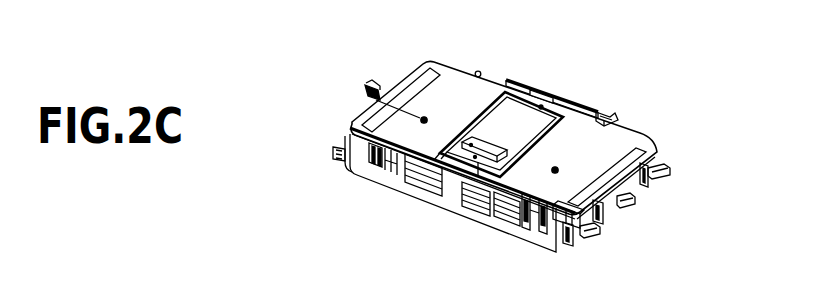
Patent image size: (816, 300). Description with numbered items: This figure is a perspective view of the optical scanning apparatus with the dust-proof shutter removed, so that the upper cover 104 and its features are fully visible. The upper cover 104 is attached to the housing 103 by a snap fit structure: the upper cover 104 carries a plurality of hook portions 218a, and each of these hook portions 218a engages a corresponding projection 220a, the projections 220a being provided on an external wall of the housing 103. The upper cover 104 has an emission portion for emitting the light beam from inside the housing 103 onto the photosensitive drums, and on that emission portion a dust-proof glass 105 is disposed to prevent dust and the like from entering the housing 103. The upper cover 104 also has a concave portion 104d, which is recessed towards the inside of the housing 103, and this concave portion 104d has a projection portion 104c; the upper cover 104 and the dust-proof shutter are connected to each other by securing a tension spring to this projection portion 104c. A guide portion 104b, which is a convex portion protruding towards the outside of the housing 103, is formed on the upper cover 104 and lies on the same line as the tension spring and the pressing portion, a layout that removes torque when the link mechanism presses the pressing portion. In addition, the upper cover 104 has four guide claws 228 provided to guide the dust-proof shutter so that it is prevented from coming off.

The housing 103 is at (407, 182).
The upper cover 104 is at (510, 135).
The guide portion 104b is at (375, 89).
The projection portion 104c is at (440, 173).
The concave portion 104d is at (477, 186).
The dust-proof glass 105 is at (415, 82).
The hook portions 218a is at (339, 152).
The projection 220a is at (370, 168).
The guide claws 228 is at (376, 100).